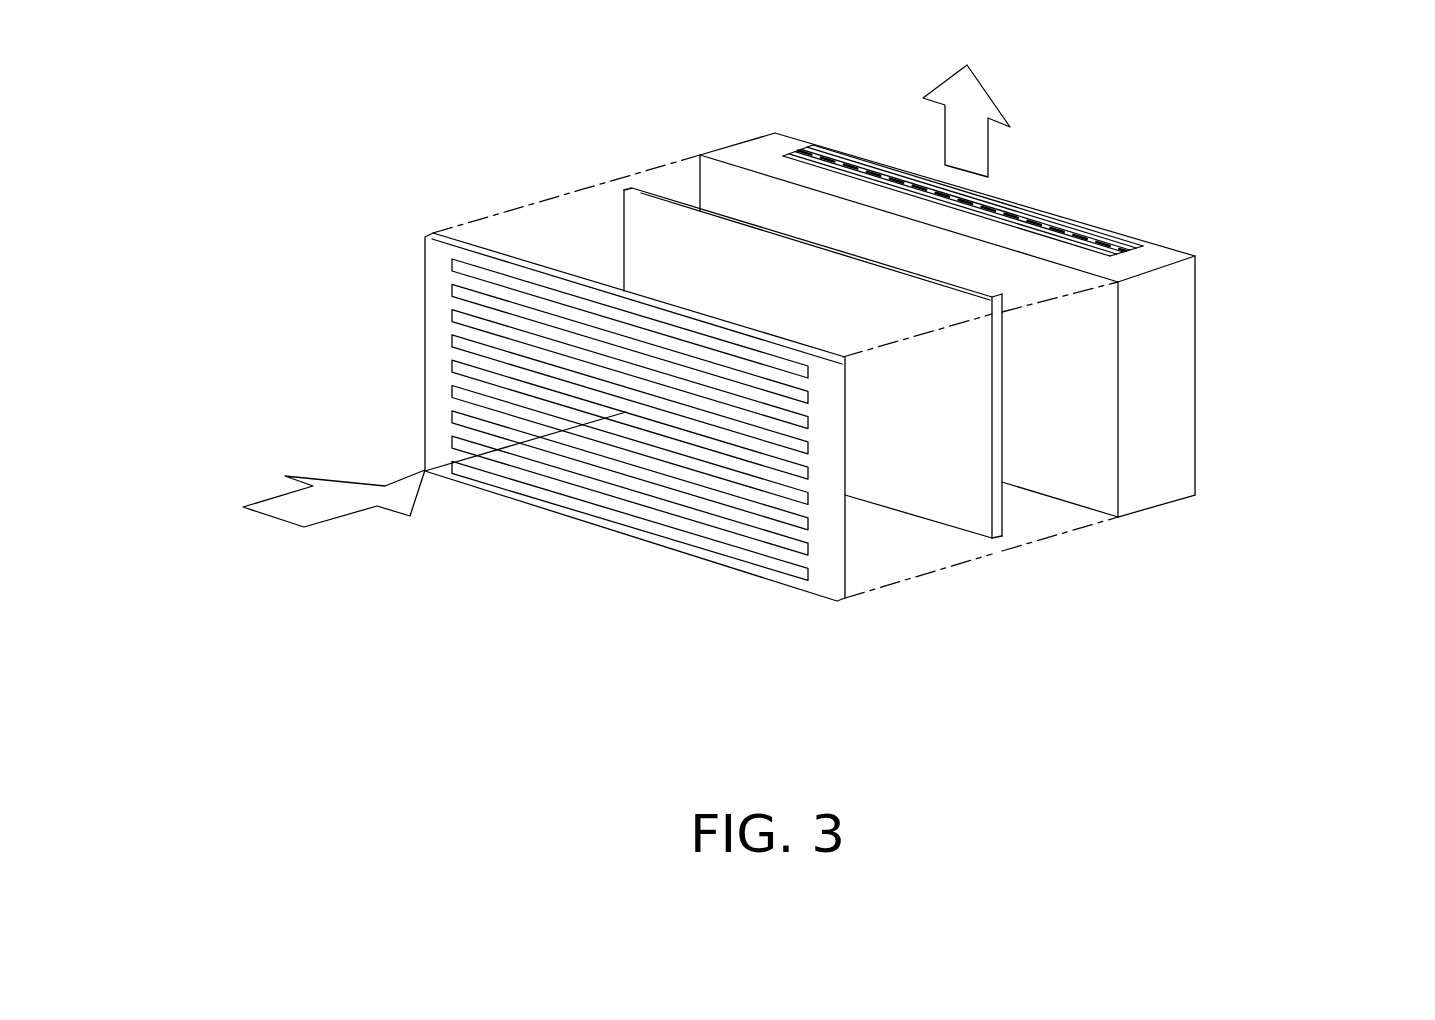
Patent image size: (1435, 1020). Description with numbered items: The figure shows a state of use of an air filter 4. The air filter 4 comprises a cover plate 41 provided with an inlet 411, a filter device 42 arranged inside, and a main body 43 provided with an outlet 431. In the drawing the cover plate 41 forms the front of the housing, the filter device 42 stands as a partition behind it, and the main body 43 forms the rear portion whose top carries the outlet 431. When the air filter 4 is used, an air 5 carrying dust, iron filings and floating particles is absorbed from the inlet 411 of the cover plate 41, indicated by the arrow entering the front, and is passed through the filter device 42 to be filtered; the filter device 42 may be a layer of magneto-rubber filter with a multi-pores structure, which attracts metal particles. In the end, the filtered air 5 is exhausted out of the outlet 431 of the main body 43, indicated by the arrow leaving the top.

The air filter 4 is at (426, 184).
The cover plate 41 is at (427, 353).
The inlet 411 is at (803, 578).
The filter device 42 is at (1000, 558).
The main body 43 is at (1195, 370).
The outlet 431 is at (1148, 247).
The air 5 is at (200, 562).